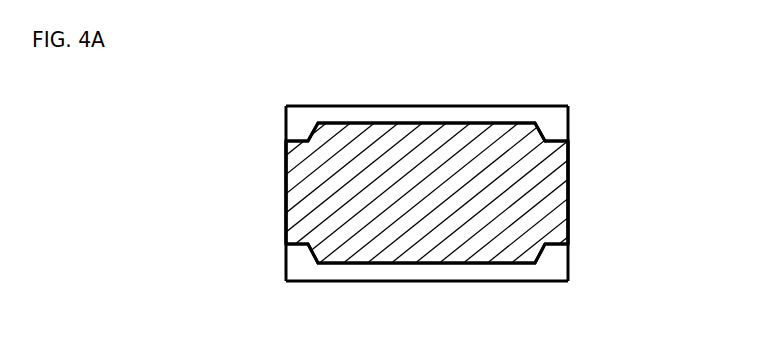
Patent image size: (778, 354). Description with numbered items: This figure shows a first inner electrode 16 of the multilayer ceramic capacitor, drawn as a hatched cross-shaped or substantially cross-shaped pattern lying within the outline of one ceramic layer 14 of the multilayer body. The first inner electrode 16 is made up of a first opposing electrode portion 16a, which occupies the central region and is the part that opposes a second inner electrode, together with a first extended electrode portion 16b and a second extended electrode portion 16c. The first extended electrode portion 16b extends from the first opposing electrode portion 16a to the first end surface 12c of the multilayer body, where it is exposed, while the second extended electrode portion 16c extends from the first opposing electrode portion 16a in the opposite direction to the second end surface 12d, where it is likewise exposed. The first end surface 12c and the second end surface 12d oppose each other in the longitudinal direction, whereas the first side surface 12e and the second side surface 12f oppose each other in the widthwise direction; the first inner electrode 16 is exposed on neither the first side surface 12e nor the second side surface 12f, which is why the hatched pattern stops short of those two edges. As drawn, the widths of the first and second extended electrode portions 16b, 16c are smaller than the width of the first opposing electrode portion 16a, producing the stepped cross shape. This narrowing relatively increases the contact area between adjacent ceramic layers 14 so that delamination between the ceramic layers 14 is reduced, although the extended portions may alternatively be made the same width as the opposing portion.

The first end surface 12c is at (288, 127).
The second end surface 12d is at (569, 266).
The first side surface 12e is at (505, 106).
The second side surface 12f is at (513, 282).
The ceramic layer 14 is at (562, 120).
The first inner electrode 16 is at (257, 63).
The first opposing electrode portion 16a is at (437, 158).
The first extended electrode portion 16b is at (297, 188).
The second extended electrode portion 16c is at (557, 182).